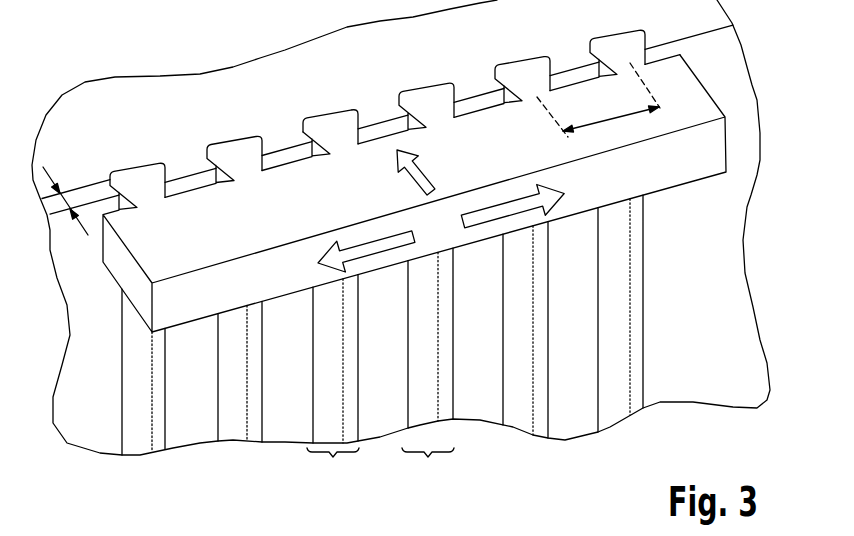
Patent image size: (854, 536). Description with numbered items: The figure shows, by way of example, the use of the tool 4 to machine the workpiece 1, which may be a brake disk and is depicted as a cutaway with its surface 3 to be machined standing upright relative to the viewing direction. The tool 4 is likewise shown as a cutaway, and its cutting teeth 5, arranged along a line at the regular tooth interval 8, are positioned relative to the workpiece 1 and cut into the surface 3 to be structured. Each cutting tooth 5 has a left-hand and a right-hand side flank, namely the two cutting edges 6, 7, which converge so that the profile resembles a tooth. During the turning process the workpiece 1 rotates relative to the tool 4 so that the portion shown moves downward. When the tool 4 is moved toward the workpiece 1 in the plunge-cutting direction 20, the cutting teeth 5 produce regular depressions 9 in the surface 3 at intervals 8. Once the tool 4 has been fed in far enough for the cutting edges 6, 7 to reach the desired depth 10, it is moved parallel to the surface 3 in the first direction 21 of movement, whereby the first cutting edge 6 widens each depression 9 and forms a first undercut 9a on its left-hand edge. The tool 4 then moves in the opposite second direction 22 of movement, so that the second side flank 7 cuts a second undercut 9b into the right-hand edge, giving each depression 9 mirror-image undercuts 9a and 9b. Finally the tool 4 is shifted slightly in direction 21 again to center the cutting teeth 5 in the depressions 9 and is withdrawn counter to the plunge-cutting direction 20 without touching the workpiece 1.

The workpiece 1 is at (258, 78).
The surface 3 is at (727, 53).
The tool 4 is at (188, 198).
The cutting tooth 5 is at (377, 119).
The first cutting edge 6 is at (306, 125).
The second cutting edge 7 is at (347, 125).
The tooth interval 8 is at (613, 121).
The depression 9 is at (380, 368).
The first undercut 9a is at (122, 438).
The second undercut 9b is at (166, 437).
The depth 10 is at (67, 192).
The plunge-cutting direction 20 is at (430, 170).
The first direction of movement 21 is at (365, 245).
The second direction of movement 22 is at (510, 203).